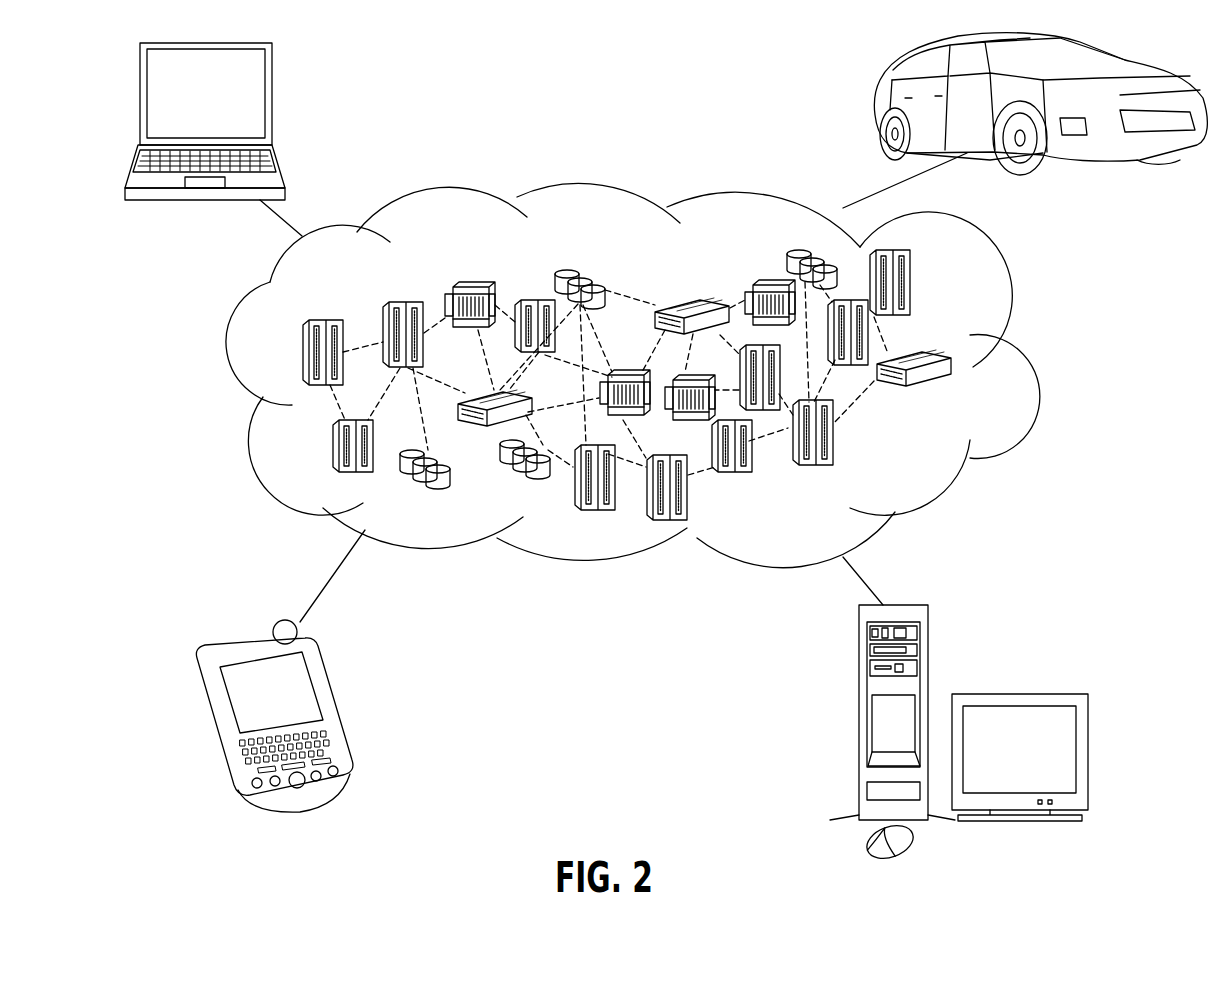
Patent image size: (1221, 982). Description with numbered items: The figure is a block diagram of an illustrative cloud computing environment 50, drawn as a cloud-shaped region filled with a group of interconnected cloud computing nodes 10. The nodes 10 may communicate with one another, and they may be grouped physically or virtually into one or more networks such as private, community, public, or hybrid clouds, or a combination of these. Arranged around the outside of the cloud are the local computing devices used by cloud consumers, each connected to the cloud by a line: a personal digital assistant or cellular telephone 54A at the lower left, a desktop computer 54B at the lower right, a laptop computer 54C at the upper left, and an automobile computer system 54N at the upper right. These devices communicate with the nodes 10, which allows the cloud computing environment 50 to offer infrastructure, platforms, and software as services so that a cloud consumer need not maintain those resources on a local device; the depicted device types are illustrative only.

The cloud computing nodes 10 is at (928, 462).
The cloud computing environment 50 is at (1012, 366).
The personal digital assistant or cellular telephone 54A is at (322, 674).
The desktop computer 54B is at (858, 661).
The laptop computer 54C is at (270, 80).
The automobile computer system 54N is at (873, 92).